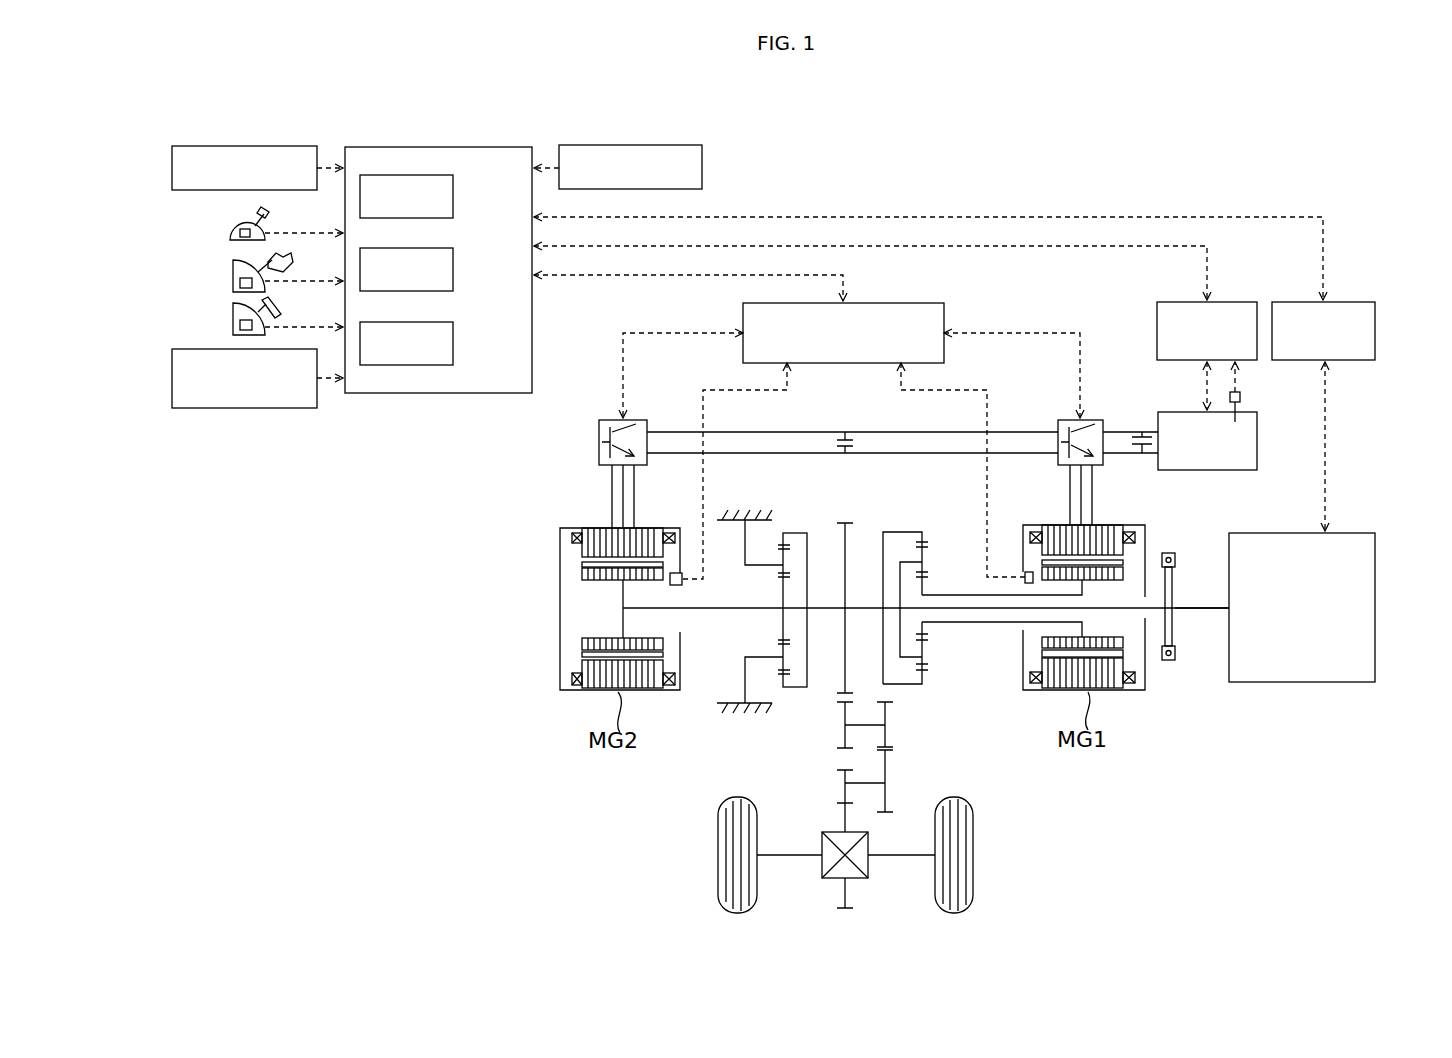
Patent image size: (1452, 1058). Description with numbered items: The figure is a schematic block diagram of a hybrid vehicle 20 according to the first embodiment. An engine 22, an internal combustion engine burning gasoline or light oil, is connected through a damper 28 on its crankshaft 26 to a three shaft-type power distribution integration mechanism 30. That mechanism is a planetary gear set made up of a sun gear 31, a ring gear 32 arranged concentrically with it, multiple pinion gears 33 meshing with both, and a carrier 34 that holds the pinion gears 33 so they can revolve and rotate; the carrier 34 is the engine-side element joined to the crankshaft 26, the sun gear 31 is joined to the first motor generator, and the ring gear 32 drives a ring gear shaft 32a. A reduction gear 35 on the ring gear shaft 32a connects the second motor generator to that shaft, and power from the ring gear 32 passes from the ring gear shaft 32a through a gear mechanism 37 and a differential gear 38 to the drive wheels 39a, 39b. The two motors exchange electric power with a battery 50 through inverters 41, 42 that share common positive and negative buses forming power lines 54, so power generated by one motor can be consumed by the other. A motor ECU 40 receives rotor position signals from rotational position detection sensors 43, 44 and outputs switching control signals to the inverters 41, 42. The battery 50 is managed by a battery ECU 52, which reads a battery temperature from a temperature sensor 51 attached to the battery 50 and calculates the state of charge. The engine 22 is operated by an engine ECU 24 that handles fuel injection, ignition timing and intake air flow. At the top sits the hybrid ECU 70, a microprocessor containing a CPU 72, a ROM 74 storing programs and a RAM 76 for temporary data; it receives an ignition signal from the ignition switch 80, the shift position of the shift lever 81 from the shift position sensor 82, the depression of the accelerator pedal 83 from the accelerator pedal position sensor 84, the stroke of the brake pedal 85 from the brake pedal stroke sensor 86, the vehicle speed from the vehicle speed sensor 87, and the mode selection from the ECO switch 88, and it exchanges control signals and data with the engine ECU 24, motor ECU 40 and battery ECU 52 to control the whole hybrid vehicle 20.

The hybrid vehicle 20 is at (1345, 198).
The engine 22 is at (1375, 606).
The engine electronic control unit 24 is at (1356, 302).
The crankshaft 26 is at (1196, 610).
The damper 28 is at (1167, 662).
The power distribution integration mechanism 30 is at (942, 593).
The sun gear 31 is at (923, 633).
The ring gear 32 is at (923, 678).
The ring gear shaft 32a is at (822, 607).
The pinion gears 33 is at (923, 660).
The carrier 34 is at (893, 577).
The reduction gear 35 is at (790, 528).
The gear mechanism 37 is at (902, 770).
The differential gear 38 is at (828, 832).
The drive wheel 39a is at (718, 852).
The drive wheel 39b is at (973, 852).
The motor electronic control unit 40 is at (934, 305).
The inverter 41 is at (1106, 420).
The inverter 42 is at (650, 420).
The rotational position detection sensor 43 is at (1028, 572).
The rotational position detection sensor 44 is at (678, 572).
The battery 50 is at (1158, 470).
The temperature sensor 51 is at (1240, 397).
The battery electronic control unit 52 is at (1254, 302).
The power lines 54 is at (803, 453).
The hybrid electronic control unit 70 is at (438, 147).
The CPU 72 is at (453, 192).
The ROM 74 is at (453, 266).
The RAM 76 is at (453, 338).
The ignition switch 80 is at (172, 166).
The shift lever 81 is at (258, 213).
The shift position sensor 82 is at (232, 232).
The accelerator pedal 83 is at (270, 262).
The accelerator pedal position sensor 84 is at (233, 283).
The brake pedal 85 is at (266, 306).
The brake pedal stroke sensor 86 is at (233, 320).
The vehicle speed sensor 87 is at (172, 380).
The ECO switch 88 is at (702, 168).